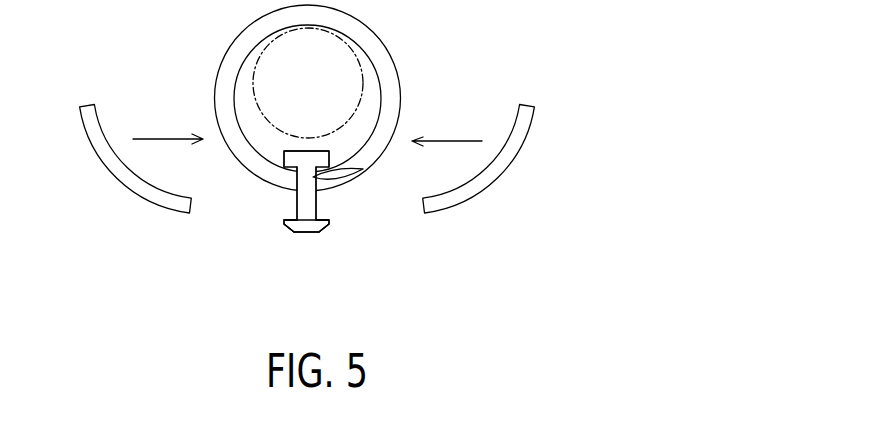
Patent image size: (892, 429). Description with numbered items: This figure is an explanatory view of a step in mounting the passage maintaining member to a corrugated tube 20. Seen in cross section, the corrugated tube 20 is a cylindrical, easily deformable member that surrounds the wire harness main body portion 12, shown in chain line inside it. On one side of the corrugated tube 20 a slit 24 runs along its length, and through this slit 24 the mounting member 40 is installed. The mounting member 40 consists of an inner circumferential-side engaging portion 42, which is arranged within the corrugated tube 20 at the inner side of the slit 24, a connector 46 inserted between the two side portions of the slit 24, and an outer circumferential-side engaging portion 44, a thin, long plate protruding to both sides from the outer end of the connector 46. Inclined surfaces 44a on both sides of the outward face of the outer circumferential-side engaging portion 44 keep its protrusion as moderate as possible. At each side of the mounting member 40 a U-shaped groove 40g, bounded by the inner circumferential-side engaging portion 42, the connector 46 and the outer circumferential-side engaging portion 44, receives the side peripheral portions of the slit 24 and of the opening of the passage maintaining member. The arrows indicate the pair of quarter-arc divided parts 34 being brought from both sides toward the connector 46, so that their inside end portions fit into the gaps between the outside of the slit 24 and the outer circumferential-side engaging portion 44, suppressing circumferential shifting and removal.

The wire harness main body portion 12 is at (372, 69).
The corrugated tube 20 is at (376, 35).
The slit 24 is at (363, 169).
The divided part 34 is at (103, 172).
The mounting member 40 is at (284, 150).
The U-shaped groove 40g is at (290, 216).
The inner circumferential-side engaging portion 42 is at (330, 151).
The outer circumferential-side engaging portion 44 is at (310, 233).
The inclined surface 44a is at (292, 233).
The connector 46 is at (297, 197).